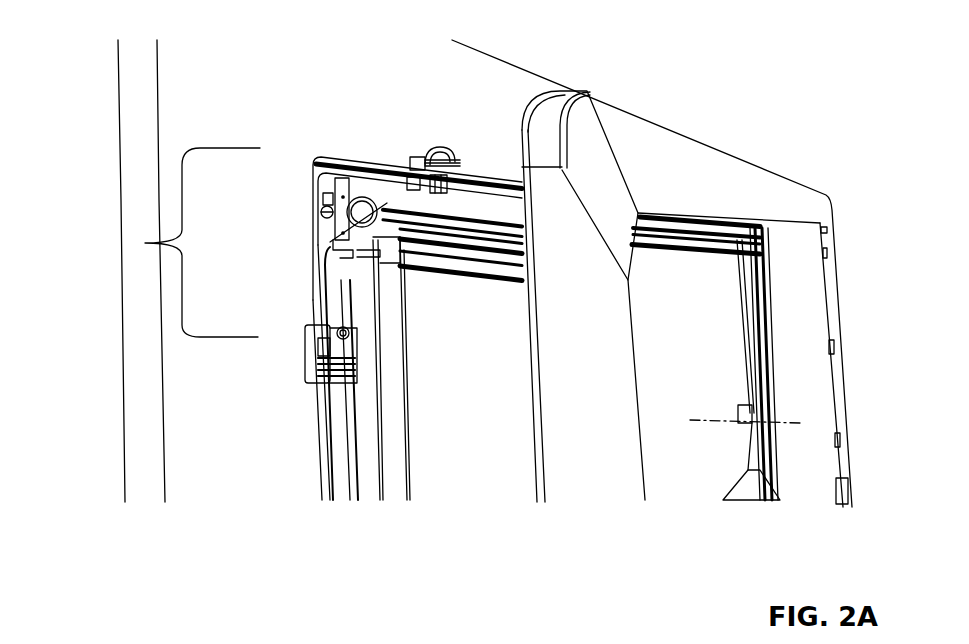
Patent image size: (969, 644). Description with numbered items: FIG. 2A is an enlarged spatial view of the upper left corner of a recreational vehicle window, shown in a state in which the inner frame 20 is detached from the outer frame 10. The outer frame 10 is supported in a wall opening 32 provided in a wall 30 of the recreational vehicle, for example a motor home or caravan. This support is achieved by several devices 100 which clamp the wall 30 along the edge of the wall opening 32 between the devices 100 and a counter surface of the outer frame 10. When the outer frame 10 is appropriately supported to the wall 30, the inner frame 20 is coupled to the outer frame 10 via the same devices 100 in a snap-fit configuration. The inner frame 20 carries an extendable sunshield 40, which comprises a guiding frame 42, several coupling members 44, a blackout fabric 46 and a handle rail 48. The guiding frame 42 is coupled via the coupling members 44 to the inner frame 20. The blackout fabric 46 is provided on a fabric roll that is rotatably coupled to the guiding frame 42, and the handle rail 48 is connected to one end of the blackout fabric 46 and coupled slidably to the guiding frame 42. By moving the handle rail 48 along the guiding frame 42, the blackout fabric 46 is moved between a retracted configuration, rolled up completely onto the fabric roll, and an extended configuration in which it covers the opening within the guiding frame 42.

The outer frame 10 is at (367, 183).
The inner frame 20 is at (652, 148).
The wall 30 is at (252, 463).
The wall opening 32 is at (453, 437).
The extendable sunshield 40 is at (145, 243).
The guiding frame 42 is at (390, 357).
The coupling members 44 is at (330, 202).
The blackout fabric 46 is at (323, 230).
The handle rail 48 is at (415, 256).
The device 100 is at (467, 143).